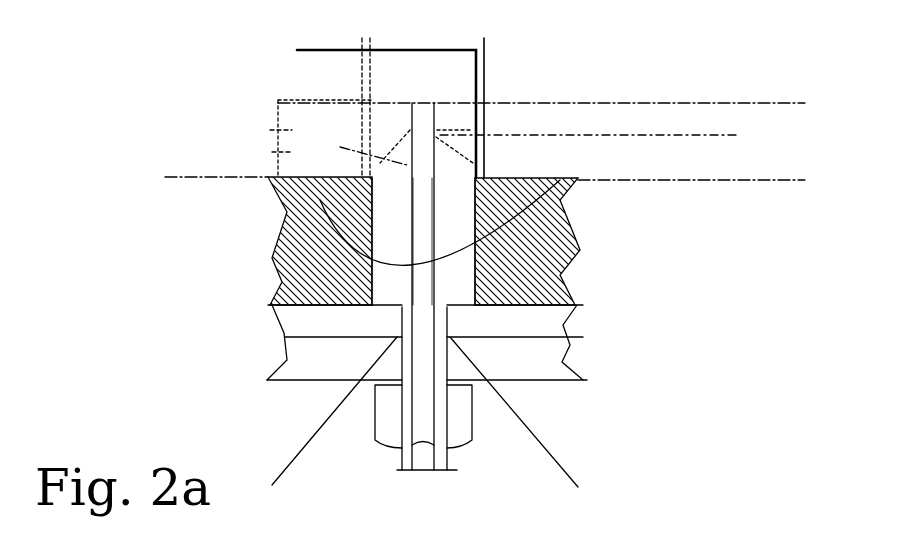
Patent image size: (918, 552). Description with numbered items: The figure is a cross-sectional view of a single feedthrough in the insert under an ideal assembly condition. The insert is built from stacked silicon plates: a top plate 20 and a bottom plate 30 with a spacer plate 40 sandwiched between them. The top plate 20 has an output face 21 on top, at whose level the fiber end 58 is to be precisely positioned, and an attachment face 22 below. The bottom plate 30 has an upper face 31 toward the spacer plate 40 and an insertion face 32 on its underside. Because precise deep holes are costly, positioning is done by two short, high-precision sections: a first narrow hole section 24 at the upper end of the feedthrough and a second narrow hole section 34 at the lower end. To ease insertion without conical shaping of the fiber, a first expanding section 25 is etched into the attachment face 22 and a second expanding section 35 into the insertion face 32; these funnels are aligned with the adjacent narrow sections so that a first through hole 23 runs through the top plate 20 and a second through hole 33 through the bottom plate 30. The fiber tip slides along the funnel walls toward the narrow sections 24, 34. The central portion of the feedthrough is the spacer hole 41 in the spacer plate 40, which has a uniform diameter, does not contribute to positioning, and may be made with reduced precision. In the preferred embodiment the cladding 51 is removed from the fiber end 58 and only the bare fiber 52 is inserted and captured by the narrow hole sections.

The top plate 20 is at (282, 133).
The output face 21 is at (300, 103).
The attachment face 22 is at (320, 177).
The first through hole 23 is at (407, 130).
The first narrow hole section 24 is at (407, 117).
The first expanding section 25 is at (400, 163).
The bottom plate 30 is at (303, 336).
The upper surface of plate 31 is at (273, 309).
The insertion face 32 is at (272, 382).
The second through hole 33 is at (287, 362).
The second narrow hole section 34 is at (443, 322).
The second expanding section 35 is at (453, 363).
The spacer plate 40 is at (547, 232).
The spacer hole 41 is at (457, 267).
The cladding 51 is at (385, 411).
The bare fiber 52 is at (422, 426).
The fiber end 58 is at (503, 40).